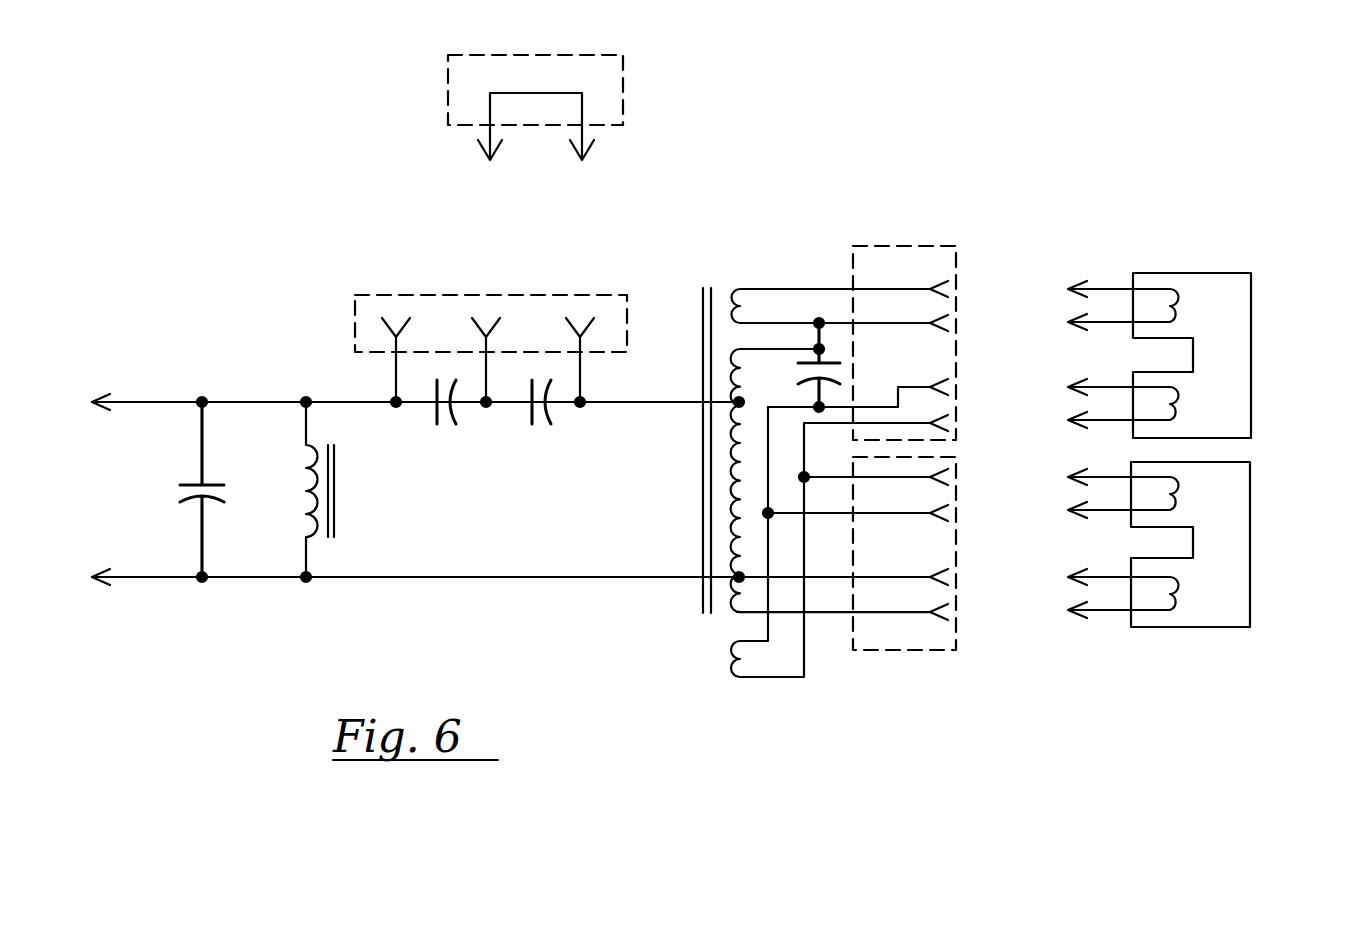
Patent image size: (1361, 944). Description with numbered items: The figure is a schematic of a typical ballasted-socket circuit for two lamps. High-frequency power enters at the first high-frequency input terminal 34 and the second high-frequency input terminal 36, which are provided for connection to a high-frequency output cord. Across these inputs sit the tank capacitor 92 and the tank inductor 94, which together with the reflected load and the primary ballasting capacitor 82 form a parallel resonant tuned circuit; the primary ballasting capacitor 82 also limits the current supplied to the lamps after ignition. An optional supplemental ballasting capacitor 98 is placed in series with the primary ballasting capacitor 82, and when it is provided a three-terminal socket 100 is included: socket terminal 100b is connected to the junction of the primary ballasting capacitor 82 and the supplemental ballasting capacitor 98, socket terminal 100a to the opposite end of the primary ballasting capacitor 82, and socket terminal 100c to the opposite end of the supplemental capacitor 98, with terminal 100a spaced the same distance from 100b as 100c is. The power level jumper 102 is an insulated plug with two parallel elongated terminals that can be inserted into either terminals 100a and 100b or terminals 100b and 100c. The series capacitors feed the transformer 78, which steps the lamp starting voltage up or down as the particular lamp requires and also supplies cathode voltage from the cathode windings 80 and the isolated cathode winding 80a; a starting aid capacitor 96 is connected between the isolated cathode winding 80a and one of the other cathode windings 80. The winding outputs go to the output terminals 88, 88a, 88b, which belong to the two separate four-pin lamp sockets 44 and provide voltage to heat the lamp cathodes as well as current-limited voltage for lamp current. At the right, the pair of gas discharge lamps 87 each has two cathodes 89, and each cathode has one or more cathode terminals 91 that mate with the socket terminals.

The high-frequency input terminal #1 34 is at (105, 395).
The high-frequency input terminal #2 36 is at (105, 590).
The tank capacitor 92 is at (192, 484).
The tank inductor 94 is at (338, 515).
The primary ballasting capacitor 82 is at (432, 418).
The supplemental ballasting capacitor 98 is at (527, 418).
The three-terminal socket 100 is at (486, 299).
The socket terminal 100a is at (395, 320).
The socket terminal 100b is at (487, 320).
The socket terminal 100c is at (580, 320).
The power level jumper 102 is at (623, 93).
The transformer 78 is at (692, 606).
The cathode windings 80 is at (736, 289).
The cathode winding 80a is at (722, 672).
The starting aid capacitor 96 is at (842, 362).
The four-pin lamp sockets 44 is at (905, 246).
The output terminals 88 is at (948, 323).
The output terminals 88a is at (948, 423).
The output terminals 88b is at (948, 513).
The cathode terminals 91 is at (1112, 322).
The cathodes 89 is at (1180, 293).
The gas discharge lamps 87 is at (1251, 330).